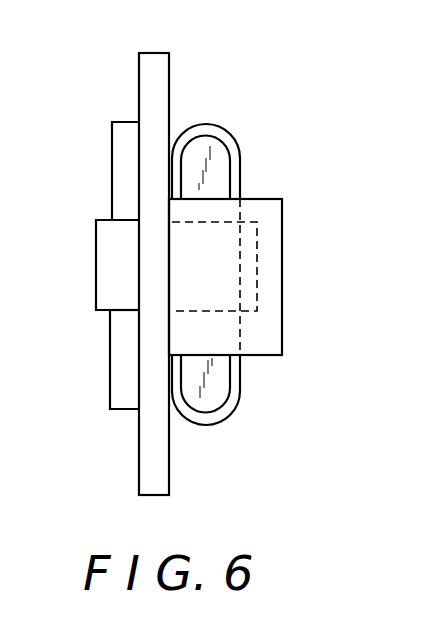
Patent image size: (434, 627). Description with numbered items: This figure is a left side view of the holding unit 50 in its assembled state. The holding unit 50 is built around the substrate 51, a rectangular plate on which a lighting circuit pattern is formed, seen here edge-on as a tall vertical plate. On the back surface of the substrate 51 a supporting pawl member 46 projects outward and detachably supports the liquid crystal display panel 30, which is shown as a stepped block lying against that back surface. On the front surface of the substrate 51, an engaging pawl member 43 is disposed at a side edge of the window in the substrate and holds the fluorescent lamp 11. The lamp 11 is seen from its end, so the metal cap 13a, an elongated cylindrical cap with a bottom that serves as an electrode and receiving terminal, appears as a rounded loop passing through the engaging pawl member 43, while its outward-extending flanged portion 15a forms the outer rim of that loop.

The holding unit 50 is at (180, 71).
The substrate 51 is at (169, 91).
The liquid crystal display panel 30 is at (115, 152).
The supporting pawl member 46 is at (96, 262).
The fluorescent lamp 11 is at (250, 153).
The engaging pawl member 43 is at (282, 277).
The metal cap 13a is at (206, 384).
The flanged portion 15a is at (228, 416).